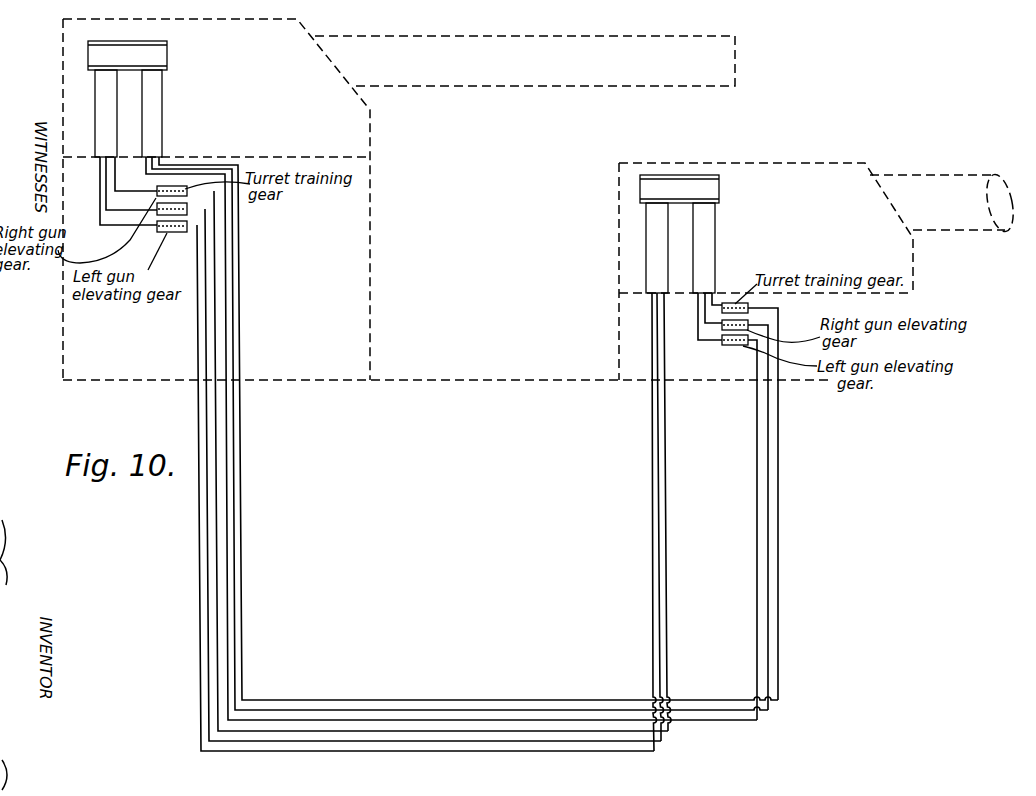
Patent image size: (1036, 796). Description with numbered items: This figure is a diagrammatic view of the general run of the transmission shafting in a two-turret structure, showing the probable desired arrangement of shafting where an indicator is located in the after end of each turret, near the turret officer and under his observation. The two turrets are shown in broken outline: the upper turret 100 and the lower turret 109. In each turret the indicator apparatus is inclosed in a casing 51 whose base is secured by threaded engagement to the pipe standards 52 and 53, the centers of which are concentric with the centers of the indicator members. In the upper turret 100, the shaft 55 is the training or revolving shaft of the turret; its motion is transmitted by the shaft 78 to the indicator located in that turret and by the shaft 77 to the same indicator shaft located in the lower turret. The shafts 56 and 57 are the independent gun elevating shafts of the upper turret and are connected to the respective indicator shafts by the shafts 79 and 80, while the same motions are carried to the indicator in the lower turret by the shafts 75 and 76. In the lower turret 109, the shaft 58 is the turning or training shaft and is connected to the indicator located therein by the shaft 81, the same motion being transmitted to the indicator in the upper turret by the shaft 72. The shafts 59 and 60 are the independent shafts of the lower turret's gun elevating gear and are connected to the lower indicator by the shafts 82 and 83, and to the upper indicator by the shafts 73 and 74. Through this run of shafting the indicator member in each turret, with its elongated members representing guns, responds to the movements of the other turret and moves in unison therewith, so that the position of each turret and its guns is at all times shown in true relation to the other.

The casing 51 is at (403, 122).
The pipe standard 52 is at (368, 181).
The pipe standard 53 is at (443, 181).
The training shaft of the upper turret 55 is at (157, 195).
The gun elevating shaft 56 is at (160, 215).
The gun elevating shaft 57 is at (168, 229).
The training shaft of the lower turret 58 is at (778, 307).
The gun elevating gear shaft 59 is at (768, 324).
The gun elevating gear shaft 60 is at (740, 346).
The shaft 72 is at (245, 498).
The shaft 73 is at (237, 545).
The shaft 74 is at (228, 589).
The shaft 75 is at (209, 606).
The shaft 76 is at (202, 638).
The shaft 77 is at (218, 672).
The shaft 78 is at (112, 177).
The shaft 79 is at (108, 204).
The shaft 80 is at (128, 193).
The shaft 81 is at (713, 304).
The shaft 82 is at (713, 326).
The shaft 83 is at (717, 339).
The upper turret 100 is at (446, 199).
The lower turret 109 is at (818, 271).